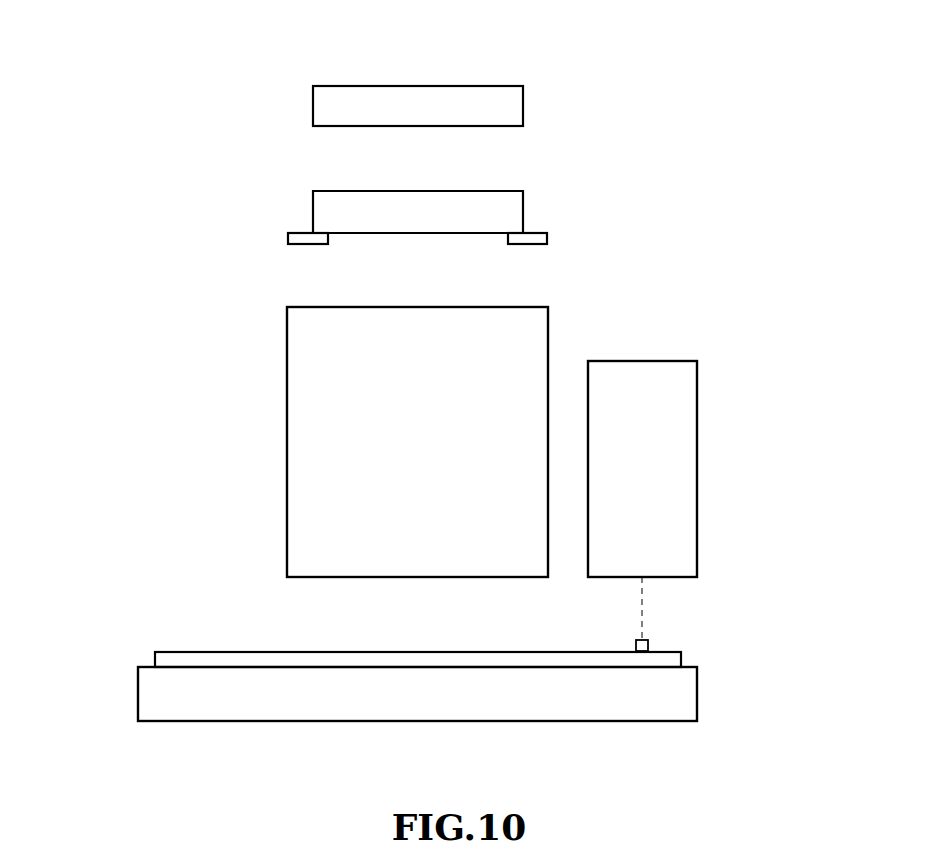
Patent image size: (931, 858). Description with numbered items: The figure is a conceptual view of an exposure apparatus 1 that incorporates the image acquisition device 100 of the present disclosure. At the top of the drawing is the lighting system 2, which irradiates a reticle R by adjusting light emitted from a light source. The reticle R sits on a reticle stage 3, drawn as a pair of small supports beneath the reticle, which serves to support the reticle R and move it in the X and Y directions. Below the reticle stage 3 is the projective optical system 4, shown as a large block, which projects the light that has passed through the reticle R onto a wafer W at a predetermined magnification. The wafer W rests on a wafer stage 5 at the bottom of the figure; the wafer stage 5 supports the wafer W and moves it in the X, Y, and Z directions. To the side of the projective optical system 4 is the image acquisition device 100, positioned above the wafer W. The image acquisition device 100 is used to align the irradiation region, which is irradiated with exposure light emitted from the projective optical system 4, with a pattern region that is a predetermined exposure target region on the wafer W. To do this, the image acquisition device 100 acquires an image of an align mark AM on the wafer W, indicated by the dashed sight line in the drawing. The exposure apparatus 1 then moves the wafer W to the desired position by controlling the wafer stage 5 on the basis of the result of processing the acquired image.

The exposure apparatus 1 is at (103, 29).
The lighting system 2 is at (313, 109).
The reticle R is at (313, 212).
The reticle stage 3 is at (288, 236).
The projective optical system 4 is at (287, 442).
The image acquisition device 100 is at (697, 470).
The align mark AM is at (648, 646).
The wafer W is at (155, 660).
The wafer stage 5 is at (138, 692).